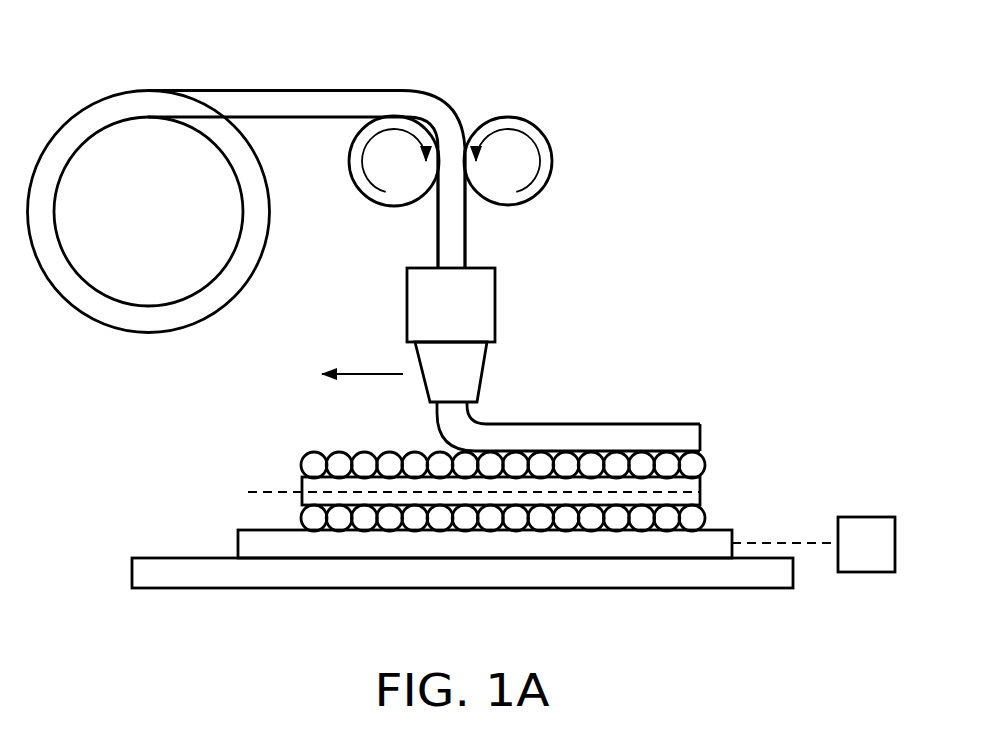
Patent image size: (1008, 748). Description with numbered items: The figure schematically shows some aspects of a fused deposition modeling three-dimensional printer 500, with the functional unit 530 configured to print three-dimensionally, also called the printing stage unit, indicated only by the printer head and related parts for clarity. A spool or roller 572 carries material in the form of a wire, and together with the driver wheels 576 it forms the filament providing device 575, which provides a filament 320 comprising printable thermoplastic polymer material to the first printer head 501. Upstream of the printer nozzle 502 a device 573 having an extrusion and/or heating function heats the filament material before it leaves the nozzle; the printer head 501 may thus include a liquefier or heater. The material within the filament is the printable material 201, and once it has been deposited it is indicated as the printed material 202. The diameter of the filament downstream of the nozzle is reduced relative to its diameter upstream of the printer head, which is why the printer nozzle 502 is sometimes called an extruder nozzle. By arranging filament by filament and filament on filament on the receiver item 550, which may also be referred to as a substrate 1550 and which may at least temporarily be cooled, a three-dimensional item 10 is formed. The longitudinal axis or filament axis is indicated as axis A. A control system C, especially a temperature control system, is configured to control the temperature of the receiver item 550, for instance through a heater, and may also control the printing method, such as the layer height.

The 3D printer 500 is at (758, 107).
The spool or roller 572 is at (88, 95).
The driver wheels 576 is at (430, 95).
The filament providing device 575 is at (529, 95).
The extrusion and/or heating device 573 is at (510, 255).
The printer head 501 is at (485, 309).
The printer nozzle 502 is at (415, 420).
The functional unit configured to 3D print 530 is at (148, 420).
The printable material 201 is at (452, 407).
The filament 320 is at (693, 518).
The printed material 202 is at (684, 432).
The 3D item 10 is at (770, 440).
The substrate 1550 is at (228, 506).
The receiver item 550 is at (228, 537).
The longitudinal axis A is at (267, 492).
The control system C is at (857, 559).